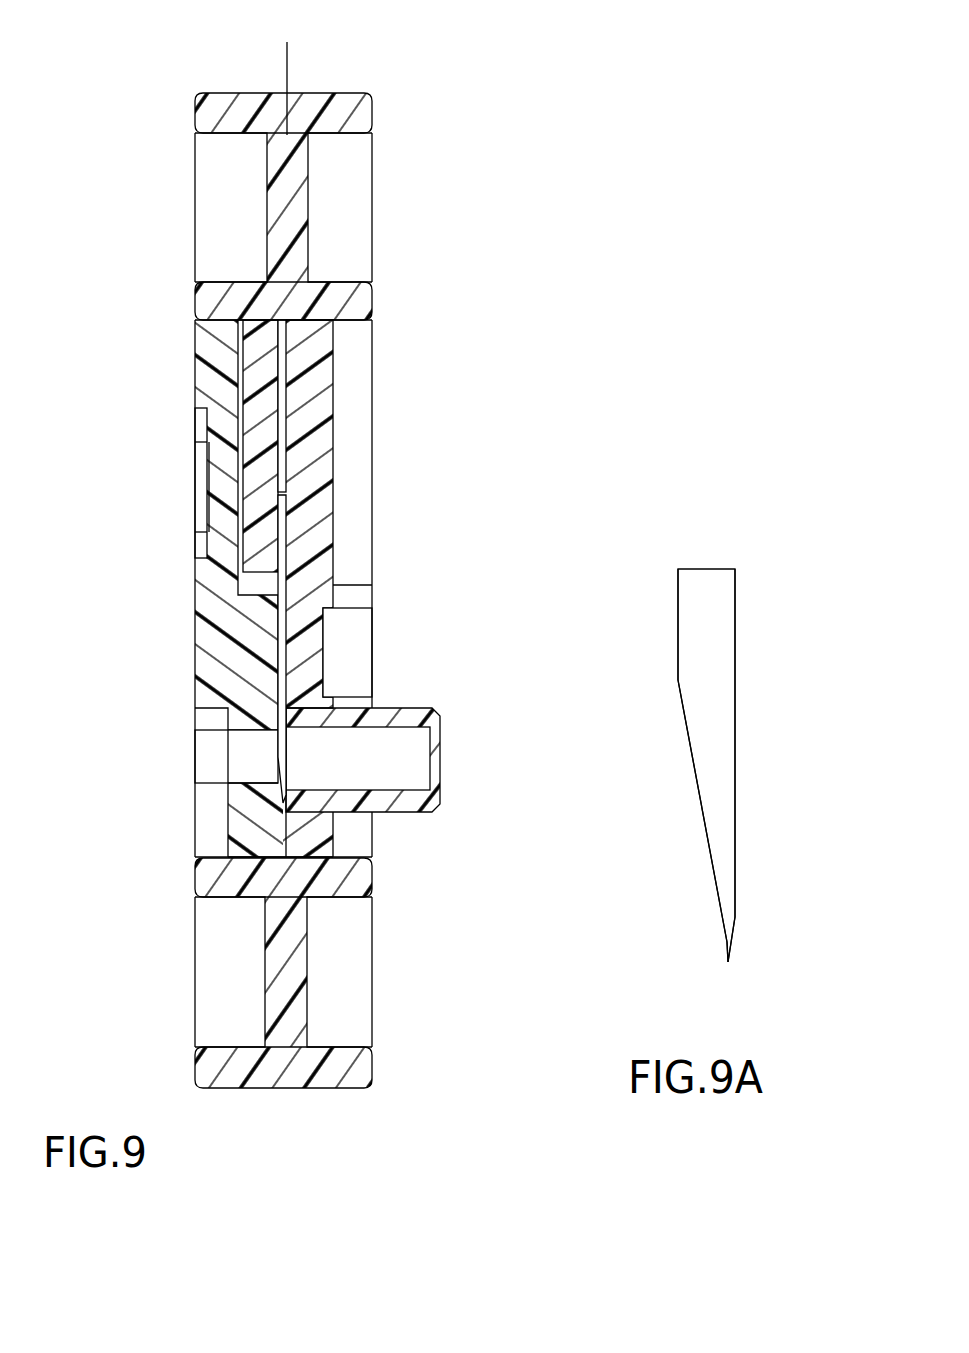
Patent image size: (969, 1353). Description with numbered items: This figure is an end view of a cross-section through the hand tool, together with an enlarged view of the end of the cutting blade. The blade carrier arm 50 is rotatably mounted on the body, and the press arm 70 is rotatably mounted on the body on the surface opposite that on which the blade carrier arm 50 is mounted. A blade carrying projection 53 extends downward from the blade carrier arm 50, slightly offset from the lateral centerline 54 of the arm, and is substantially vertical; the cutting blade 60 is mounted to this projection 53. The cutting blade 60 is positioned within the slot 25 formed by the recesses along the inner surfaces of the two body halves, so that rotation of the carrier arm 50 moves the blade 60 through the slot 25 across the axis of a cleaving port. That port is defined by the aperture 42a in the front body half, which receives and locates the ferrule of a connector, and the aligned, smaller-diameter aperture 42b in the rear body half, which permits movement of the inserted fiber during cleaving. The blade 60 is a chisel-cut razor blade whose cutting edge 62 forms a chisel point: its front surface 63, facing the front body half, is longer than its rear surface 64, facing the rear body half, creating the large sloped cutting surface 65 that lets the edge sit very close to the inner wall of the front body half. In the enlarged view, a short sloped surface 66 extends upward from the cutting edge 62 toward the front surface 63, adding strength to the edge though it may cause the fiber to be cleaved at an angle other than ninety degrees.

In FIG. 9, the slot 25 is at (283, 497).
In FIG. 9, the aperture 42a is at (387, 727).
In FIG. 9, the aperture 42b is at (250, 733).
In FIG. 9, the blade carrier arm 50 is at (367, 110).
In FIG. 9, the blade carrying projection 53 is at (260, 423).
In FIG. 9, the lateral centerline 54 is at (288, 50).
In FIG. 9, the cutting blade 60 is at (279, 666).
In FIG. 9A, the cutting blade 60 is at (700, 593).
In FIG. 9A, the cutting edge 62 is at (728, 962).
In FIG. 9A, the front surface 63 is at (737, 697).
In FIG. 9A, the rear surface 64 is at (678, 627).
In FIG. 9, the sloped cutting surface 65 is at (278, 780).
In FIG. 9A, the sloped cutting surface 65 is at (692, 757).
In FIG. 9A, the short sloped surface 66 is at (735, 920).
In FIG. 9, the press arm 70 is at (262, 1082).